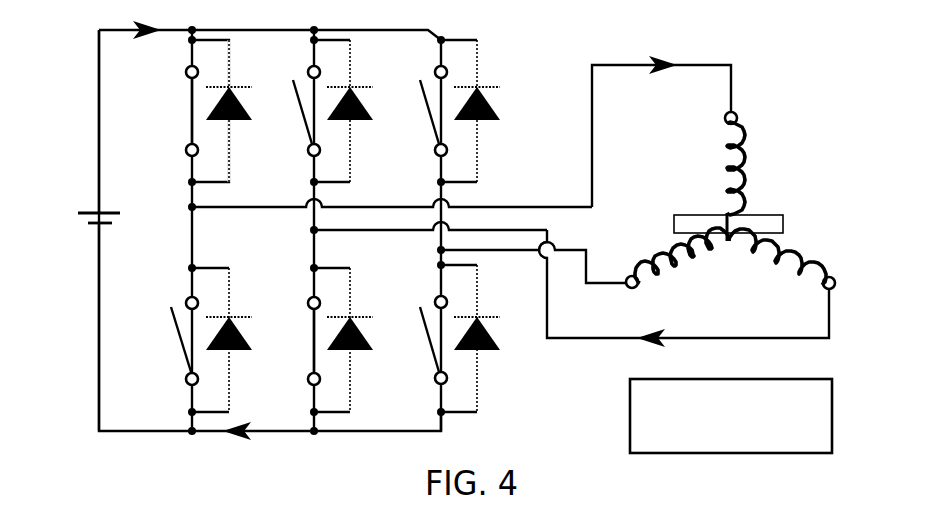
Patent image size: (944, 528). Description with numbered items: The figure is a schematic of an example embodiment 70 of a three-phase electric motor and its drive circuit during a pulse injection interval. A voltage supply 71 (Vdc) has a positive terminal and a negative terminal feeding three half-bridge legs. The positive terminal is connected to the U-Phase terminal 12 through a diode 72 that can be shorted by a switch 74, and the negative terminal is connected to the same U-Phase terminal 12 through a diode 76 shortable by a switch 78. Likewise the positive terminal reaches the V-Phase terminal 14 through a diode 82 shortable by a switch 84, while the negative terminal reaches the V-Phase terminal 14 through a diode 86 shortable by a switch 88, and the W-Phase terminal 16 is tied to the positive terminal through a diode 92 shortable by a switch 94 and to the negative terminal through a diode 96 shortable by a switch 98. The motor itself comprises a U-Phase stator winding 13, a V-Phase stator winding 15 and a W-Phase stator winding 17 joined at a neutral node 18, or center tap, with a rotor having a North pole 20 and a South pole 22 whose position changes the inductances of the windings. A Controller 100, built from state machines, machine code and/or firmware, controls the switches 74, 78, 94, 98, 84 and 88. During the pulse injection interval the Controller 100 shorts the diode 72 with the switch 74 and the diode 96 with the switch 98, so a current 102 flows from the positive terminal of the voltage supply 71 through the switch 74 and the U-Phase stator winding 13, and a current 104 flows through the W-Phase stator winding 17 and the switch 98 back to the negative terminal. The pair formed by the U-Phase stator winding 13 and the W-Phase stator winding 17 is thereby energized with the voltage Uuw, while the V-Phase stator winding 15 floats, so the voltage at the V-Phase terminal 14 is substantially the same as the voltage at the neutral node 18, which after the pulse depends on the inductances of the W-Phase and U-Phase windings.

The example embodiment 70 is at (806, 62).
The voltage supply 71 is at (112, 213).
The diode 72 is at (244, 106).
The switch 74 is at (190, 104).
The diode 76 is at (244, 336).
The switch 78 is at (180, 348).
The diode 82 is at (492, 106).
The switch 84 is at (431, 131).
The diode 86 is at (492, 336).
The switch 88 is at (431, 354).
The diode 92 is at (365, 106).
The switch 94 is at (310, 132).
The diode 96 is at (365, 336).
The switch 98 is at (311, 358).
The Controller 100 is at (673, 409).
The current 102 is at (150, 30).
The current 104 is at (255, 431).
The U-Phase terminal 12 is at (727, 113).
The U-Phase stator winding 13 is at (718, 148).
The V-Phase terminal 14 is at (634, 288).
The V-Phase stator winding 15 is at (706, 270).
The W-Phase terminal 16 is at (836, 276).
The W-Phase stator winding 17 is at (806, 242).
The neutral node 18 is at (730, 244).
The North pole 20 is at (698, 215).
The South pole 22 is at (765, 214).